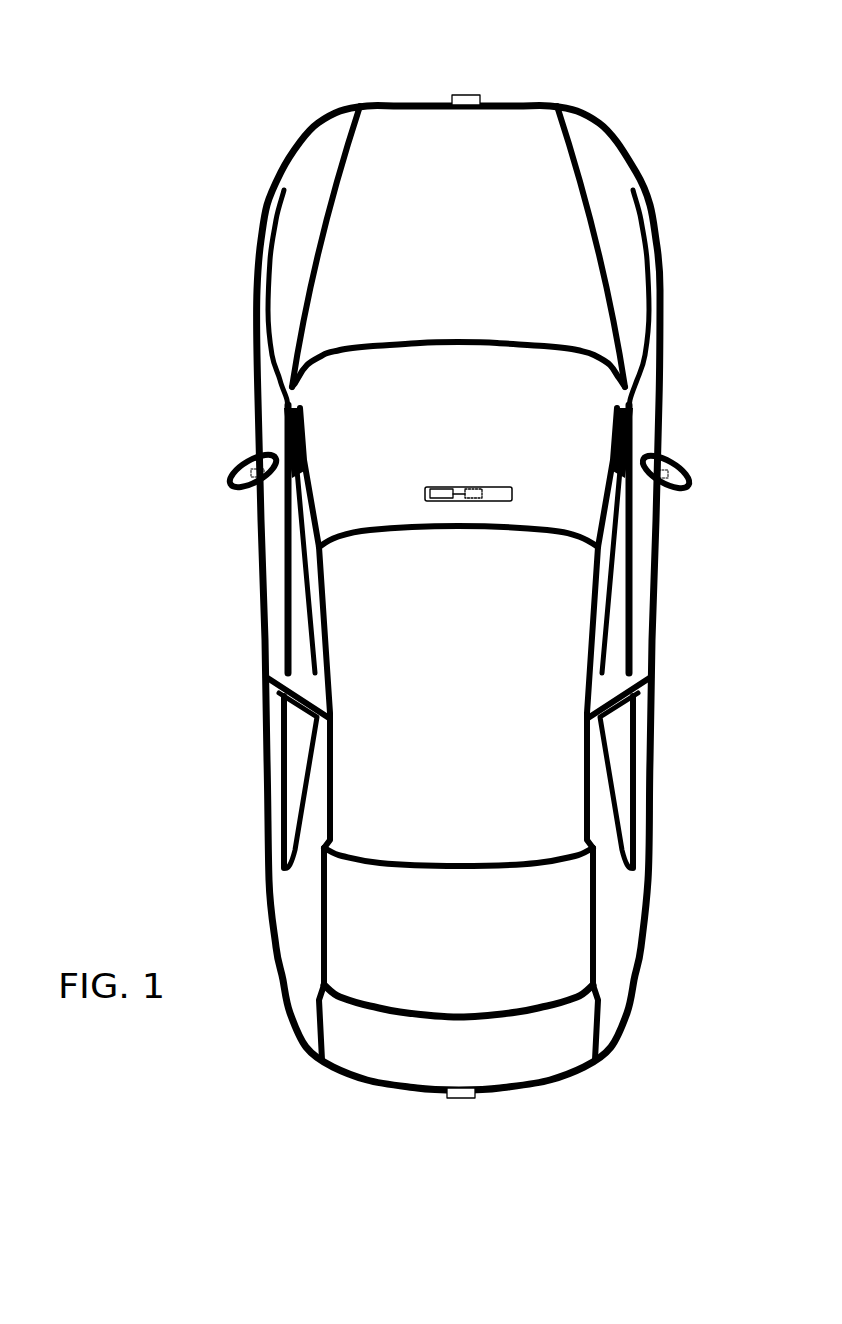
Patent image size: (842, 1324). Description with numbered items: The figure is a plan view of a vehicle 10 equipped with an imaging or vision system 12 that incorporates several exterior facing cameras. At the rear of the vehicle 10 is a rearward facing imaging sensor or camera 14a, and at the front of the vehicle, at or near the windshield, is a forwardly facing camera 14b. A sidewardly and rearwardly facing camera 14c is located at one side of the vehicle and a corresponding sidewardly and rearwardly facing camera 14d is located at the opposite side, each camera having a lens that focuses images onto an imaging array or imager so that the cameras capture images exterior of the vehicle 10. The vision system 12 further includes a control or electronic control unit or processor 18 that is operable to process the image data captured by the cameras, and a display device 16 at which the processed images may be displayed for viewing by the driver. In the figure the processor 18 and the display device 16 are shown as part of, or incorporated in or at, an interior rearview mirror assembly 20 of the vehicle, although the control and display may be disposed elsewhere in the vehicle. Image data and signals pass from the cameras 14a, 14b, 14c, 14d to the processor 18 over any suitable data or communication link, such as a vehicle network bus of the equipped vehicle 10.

The vehicle 10 is at (208, 198).
The vision system 12 is at (410, 1120).
The rearward facing camera 14a is at (465, 1097).
The forwardly facing camera 14b is at (468, 95).
The sidewardly/rearwardly facing camera 14c is at (245, 468).
The sidewardly/rearwardly facing camera 14d is at (668, 471).
The display device 16 is at (440, 488).
The electronic control unit 18 is at (467, 488).
The interior rearview mirror assembly 20 is at (510, 488).